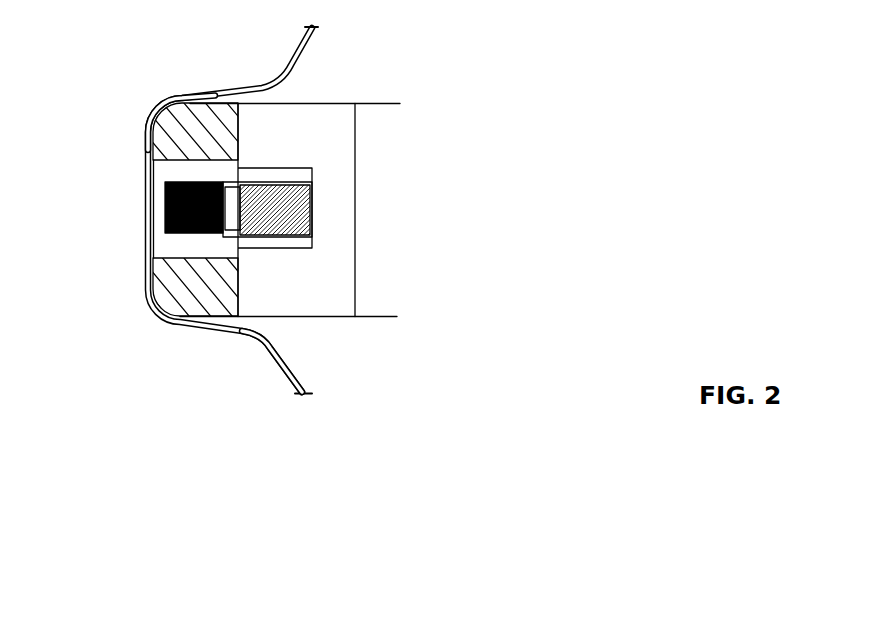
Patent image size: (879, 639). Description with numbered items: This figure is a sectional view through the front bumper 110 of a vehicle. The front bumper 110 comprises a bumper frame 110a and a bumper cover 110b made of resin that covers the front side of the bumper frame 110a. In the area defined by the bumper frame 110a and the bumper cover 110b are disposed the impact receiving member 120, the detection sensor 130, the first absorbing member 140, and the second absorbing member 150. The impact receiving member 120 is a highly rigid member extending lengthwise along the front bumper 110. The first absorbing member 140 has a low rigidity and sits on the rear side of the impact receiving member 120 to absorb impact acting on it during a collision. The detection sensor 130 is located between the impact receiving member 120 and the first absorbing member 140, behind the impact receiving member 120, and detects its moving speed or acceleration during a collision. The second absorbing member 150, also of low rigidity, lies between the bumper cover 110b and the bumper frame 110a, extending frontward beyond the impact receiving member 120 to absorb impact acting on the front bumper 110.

The front bumper 110 is at (177, 90).
The bumper frame 110a is at (263, 298).
The bumper cover 110b is at (162, 112).
The impact receiving member 120 is at (190, 243).
The detection sensor 130 is at (232, 212).
The first absorbing member 140 is at (260, 174).
The second absorbing member 150 is at (178, 138).